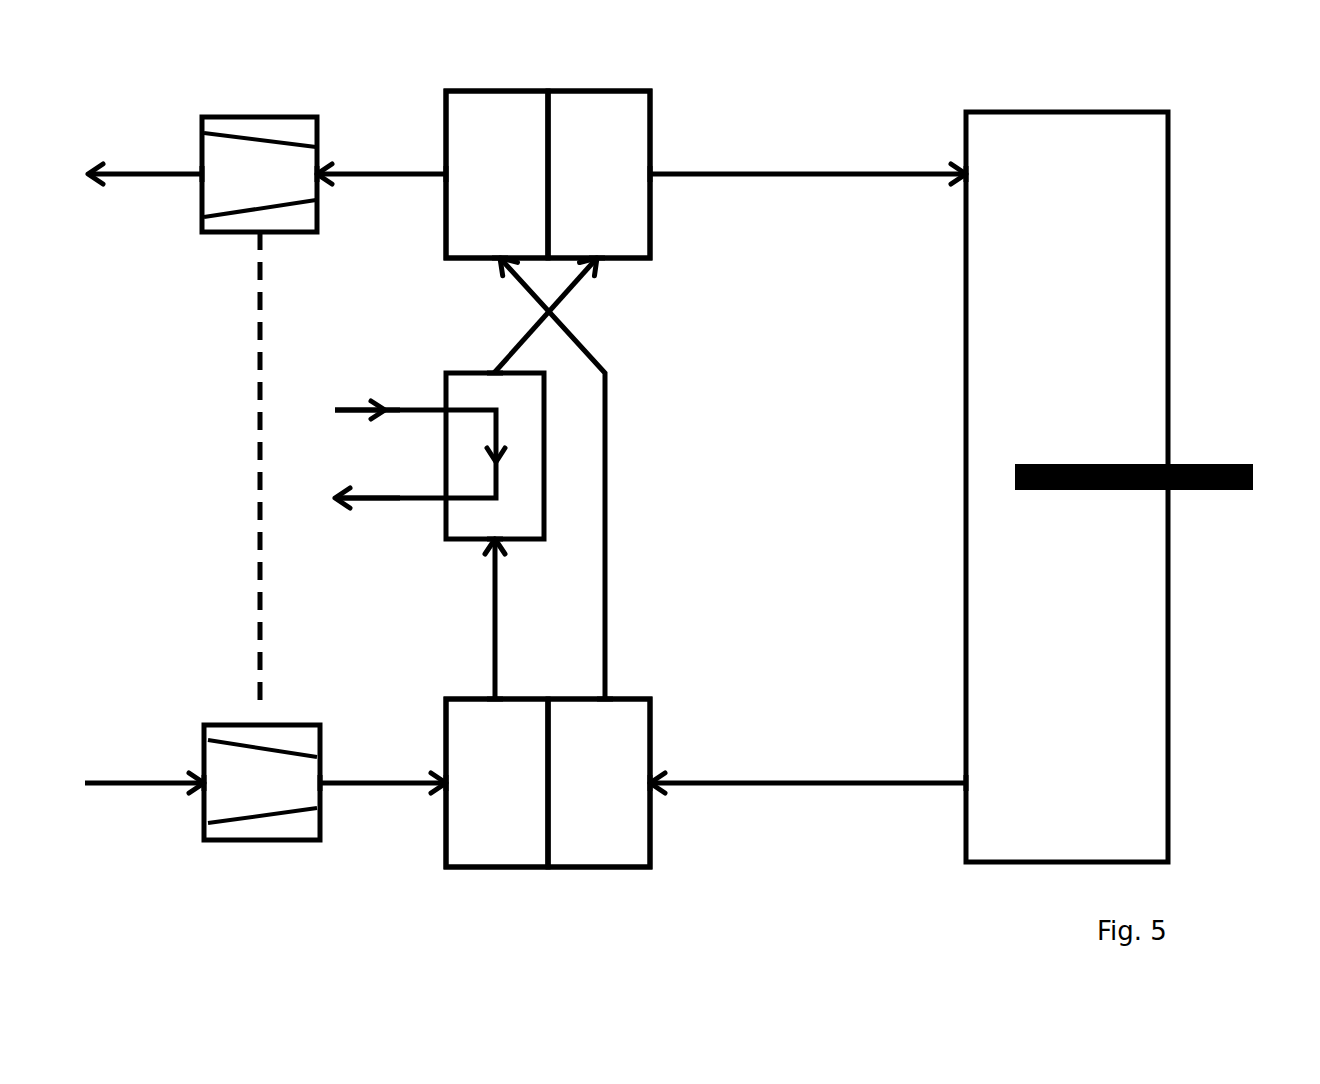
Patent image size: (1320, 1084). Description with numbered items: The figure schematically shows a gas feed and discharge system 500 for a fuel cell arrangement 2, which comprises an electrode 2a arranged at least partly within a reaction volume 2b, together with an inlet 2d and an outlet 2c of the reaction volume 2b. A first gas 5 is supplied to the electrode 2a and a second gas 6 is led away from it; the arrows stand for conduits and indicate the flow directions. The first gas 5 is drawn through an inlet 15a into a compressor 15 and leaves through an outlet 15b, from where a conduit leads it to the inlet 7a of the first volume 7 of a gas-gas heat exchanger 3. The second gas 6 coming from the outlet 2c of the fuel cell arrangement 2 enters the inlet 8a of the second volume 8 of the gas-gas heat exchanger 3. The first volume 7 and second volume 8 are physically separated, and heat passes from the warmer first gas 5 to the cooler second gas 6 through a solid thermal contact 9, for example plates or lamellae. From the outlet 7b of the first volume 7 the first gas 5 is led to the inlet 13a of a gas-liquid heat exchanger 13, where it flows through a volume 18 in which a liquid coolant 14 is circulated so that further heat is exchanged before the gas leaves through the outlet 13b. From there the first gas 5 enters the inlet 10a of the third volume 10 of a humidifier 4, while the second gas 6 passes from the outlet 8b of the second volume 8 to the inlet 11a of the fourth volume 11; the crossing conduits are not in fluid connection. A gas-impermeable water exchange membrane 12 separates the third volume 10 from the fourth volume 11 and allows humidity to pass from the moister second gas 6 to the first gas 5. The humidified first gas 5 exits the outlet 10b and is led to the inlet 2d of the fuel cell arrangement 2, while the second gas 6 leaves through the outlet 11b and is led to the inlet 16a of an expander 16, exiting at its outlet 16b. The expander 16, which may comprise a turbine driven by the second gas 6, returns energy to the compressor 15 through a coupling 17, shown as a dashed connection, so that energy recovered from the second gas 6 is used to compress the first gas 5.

The fuel cell arrangement 2 is at (1170, 738).
The electrode 2a is at (1192, 468).
The reaction volume 2b is at (1067, 686).
The outlet of the fuel cell arrangement 2c is at (968, 785).
The inlet of the fuel cell arrangement 2d is at (968, 172).
The gas-gas heat exchanger 3 is at (537, 782).
The humidifier 4 is at (559, 180).
The first gas 5 is at (133, 787).
The second gas 6 is at (832, 779).
The first volume 7 is at (497, 783).
The inlet of the first volume 7a is at (440, 790).
The outlet of the first volume 7b is at (492, 697).
The second volume 8 is at (599, 783).
The inlet of the second volume 8a is at (652, 790).
The outlet of the second volume 8b is at (606, 697).
The thermal contact 9 is at (548, 843).
The third volume 10 is at (599, 174).
The inlet of the third volume 10a is at (603, 262).
The outlet of the third volume 10b is at (652, 172).
The fourth volume 11 is at (497, 174).
The inlet of the fourth volume 11a is at (497, 262).
The outlet of the fourth volume 11b is at (444, 172).
The water exchange membrane 12 is at (546, 130).
The gas-liquid heat exchanger 13 is at (522, 545).
The inlet of the gas-liquid heat exchanger 13a is at (490, 543).
The outlet of the gas-liquid heat exchanger 13b is at (492, 372).
The coolant 14 is at (355, 406).
The compressor 15 is at (243, 842).
The inlet of the compressor 15a is at (200, 778).
The outlet of the compressor 15b is at (321, 778).
The expander 16 is at (258, 113).
The inlet of the expander 16a is at (318, 160).
The outlet of the expander 16b is at (200, 180).
The coupling 17 is at (258, 463).
The volume of the gas-liquid heat exchanger 18 is at (432, 445).
The gas feed and discharge system 500 is at (1203, 193).